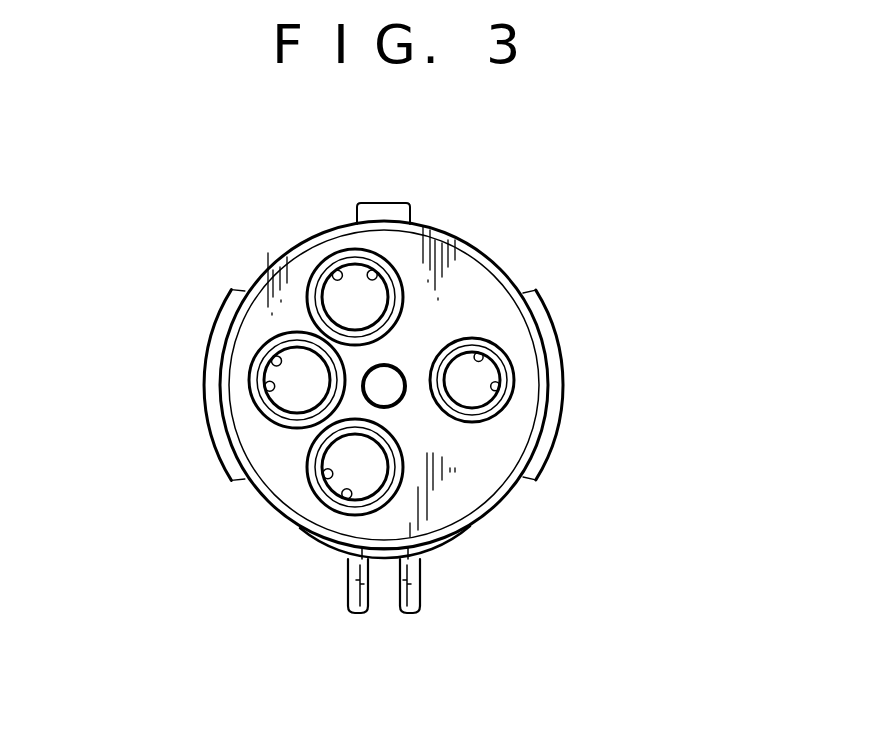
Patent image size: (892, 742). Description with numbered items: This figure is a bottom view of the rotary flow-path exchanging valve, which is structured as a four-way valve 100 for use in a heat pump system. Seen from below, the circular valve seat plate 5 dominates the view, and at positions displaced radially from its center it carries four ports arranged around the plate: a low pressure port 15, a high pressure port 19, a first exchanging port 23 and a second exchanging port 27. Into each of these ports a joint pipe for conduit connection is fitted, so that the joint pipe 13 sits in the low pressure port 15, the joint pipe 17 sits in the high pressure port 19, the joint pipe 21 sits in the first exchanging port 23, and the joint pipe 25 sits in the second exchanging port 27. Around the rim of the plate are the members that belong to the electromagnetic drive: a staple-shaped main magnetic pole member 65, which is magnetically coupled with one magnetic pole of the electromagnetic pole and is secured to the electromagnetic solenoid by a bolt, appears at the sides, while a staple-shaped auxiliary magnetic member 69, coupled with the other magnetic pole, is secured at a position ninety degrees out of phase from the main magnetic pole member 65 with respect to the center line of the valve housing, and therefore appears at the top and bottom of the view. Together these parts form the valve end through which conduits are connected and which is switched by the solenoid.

The four-way valve 100 is at (494, 226).
The valve seat plate 5 is at (468, 480).
The main magnetic pole member 65 is at (574, 347).
The auxiliary magnetic member 69 is at (379, 203).
The joint pipe 21 is at (392, 268).
The first exchanging port 23 is at (340, 268).
The joint pipe 13 is at (263, 358).
The low pressure port 15 is at (260, 385).
The second exchanging port 27 is at (327, 472).
The joint pipe 25 is at (350, 490).
The joint pipe 17 is at (483, 345).
The high pressure port 19 is at (490, 390).